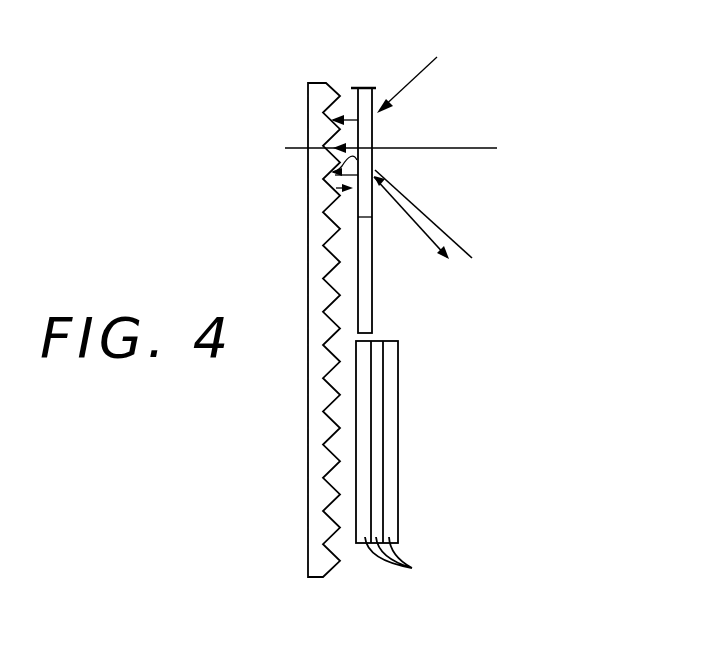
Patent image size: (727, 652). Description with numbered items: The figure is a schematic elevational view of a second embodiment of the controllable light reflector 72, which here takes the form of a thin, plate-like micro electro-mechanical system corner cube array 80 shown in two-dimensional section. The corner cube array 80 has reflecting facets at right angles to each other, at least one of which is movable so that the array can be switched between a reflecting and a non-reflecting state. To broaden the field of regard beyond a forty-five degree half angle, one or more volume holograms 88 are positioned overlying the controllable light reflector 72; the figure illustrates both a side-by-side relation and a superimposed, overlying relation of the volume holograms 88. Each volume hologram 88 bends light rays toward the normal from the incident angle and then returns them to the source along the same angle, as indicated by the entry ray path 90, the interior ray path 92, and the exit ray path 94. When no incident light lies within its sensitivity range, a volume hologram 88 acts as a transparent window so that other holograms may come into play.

The controllable light reflector 72 is at (289, 297).
The micro electro-mechanical system corner cube array 80 is at (308, 210).
The volume hologram 88 is at (387, 54).
The entry ray path 90 is at (405, 195).
The interior ray path 92 is at (308, 150).
The exit ray path 94 is at (433, 232).